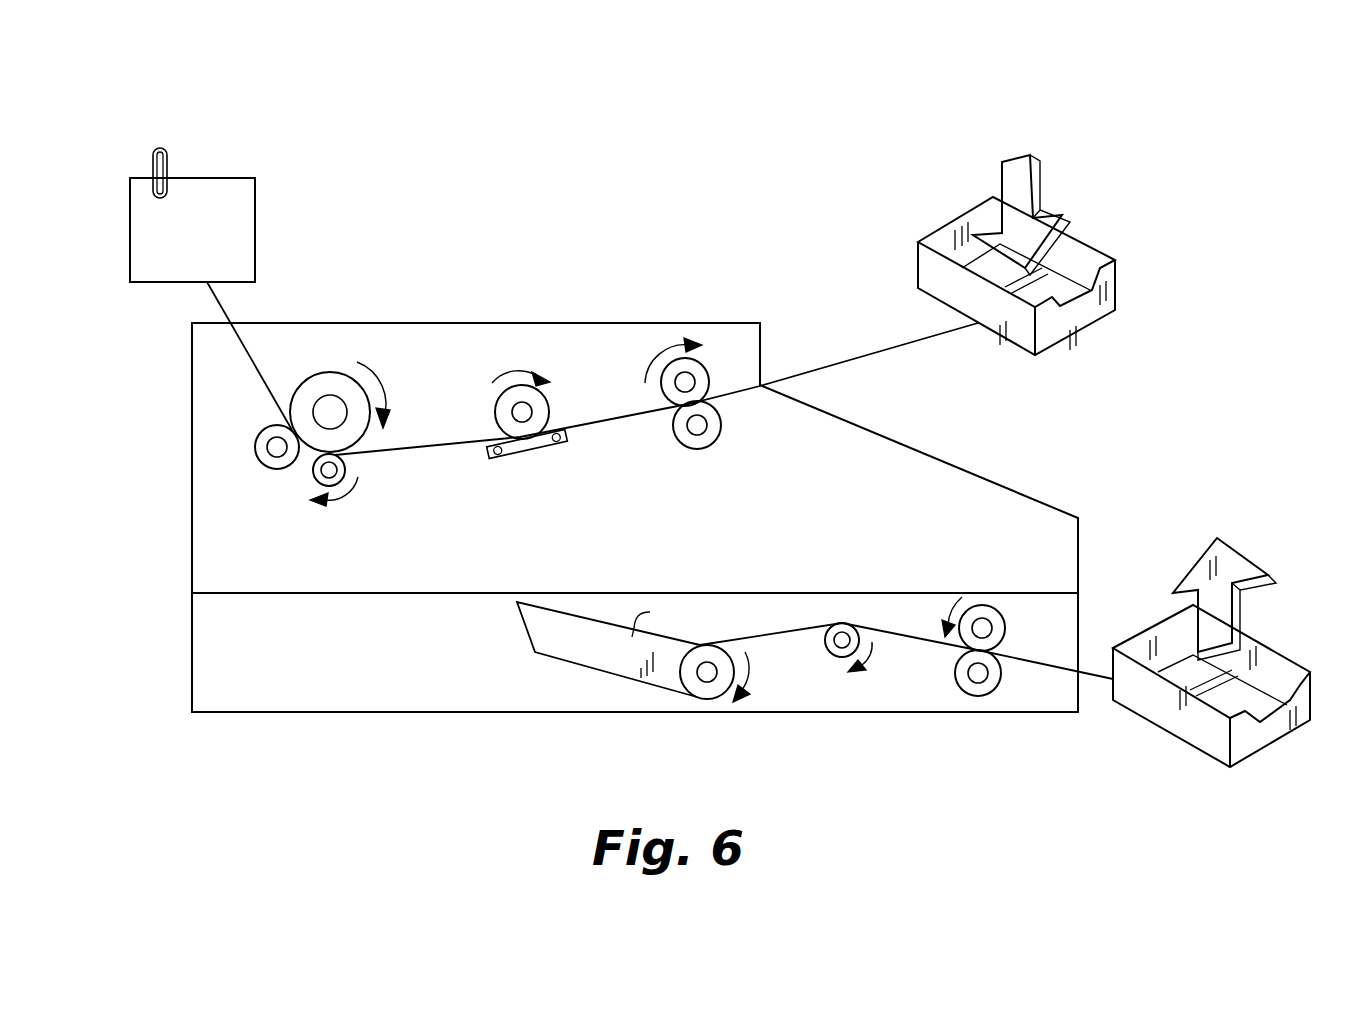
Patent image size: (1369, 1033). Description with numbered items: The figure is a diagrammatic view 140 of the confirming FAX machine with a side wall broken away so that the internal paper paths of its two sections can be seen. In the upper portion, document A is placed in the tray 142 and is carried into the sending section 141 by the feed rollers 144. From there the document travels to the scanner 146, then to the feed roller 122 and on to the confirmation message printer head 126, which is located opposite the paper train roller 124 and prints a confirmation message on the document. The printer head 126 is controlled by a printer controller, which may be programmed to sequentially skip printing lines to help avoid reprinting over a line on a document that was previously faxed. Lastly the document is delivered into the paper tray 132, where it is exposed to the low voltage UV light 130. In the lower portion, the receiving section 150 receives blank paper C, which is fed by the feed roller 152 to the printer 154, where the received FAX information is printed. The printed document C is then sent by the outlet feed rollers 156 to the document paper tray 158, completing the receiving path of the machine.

The diagrammatic view 140 is at (937, 100).
The sending section 141 is at (532, 323).
The tray 142 is at (1093, 240).
The feed rollers 144 is at (709, 382).
The scanner 146 is at (540, 415).
The paper train roller 124 is at (301, 380).
The confirmation message printer head 126 is at (255, 443).
The feed roller 122 is at (313, 473).
The low voltage UV light 130 is at (168, 163).
The paper tray 132 is at (258, 224).
The receiving section 150 is at (293, 700).
The feed roller 152 is at (706, 690).
The printer 154 is at (824, 641).
The outlet feed rollers 156 is at (1000, 677).
The document paper tray 158 is at (1280, 665).